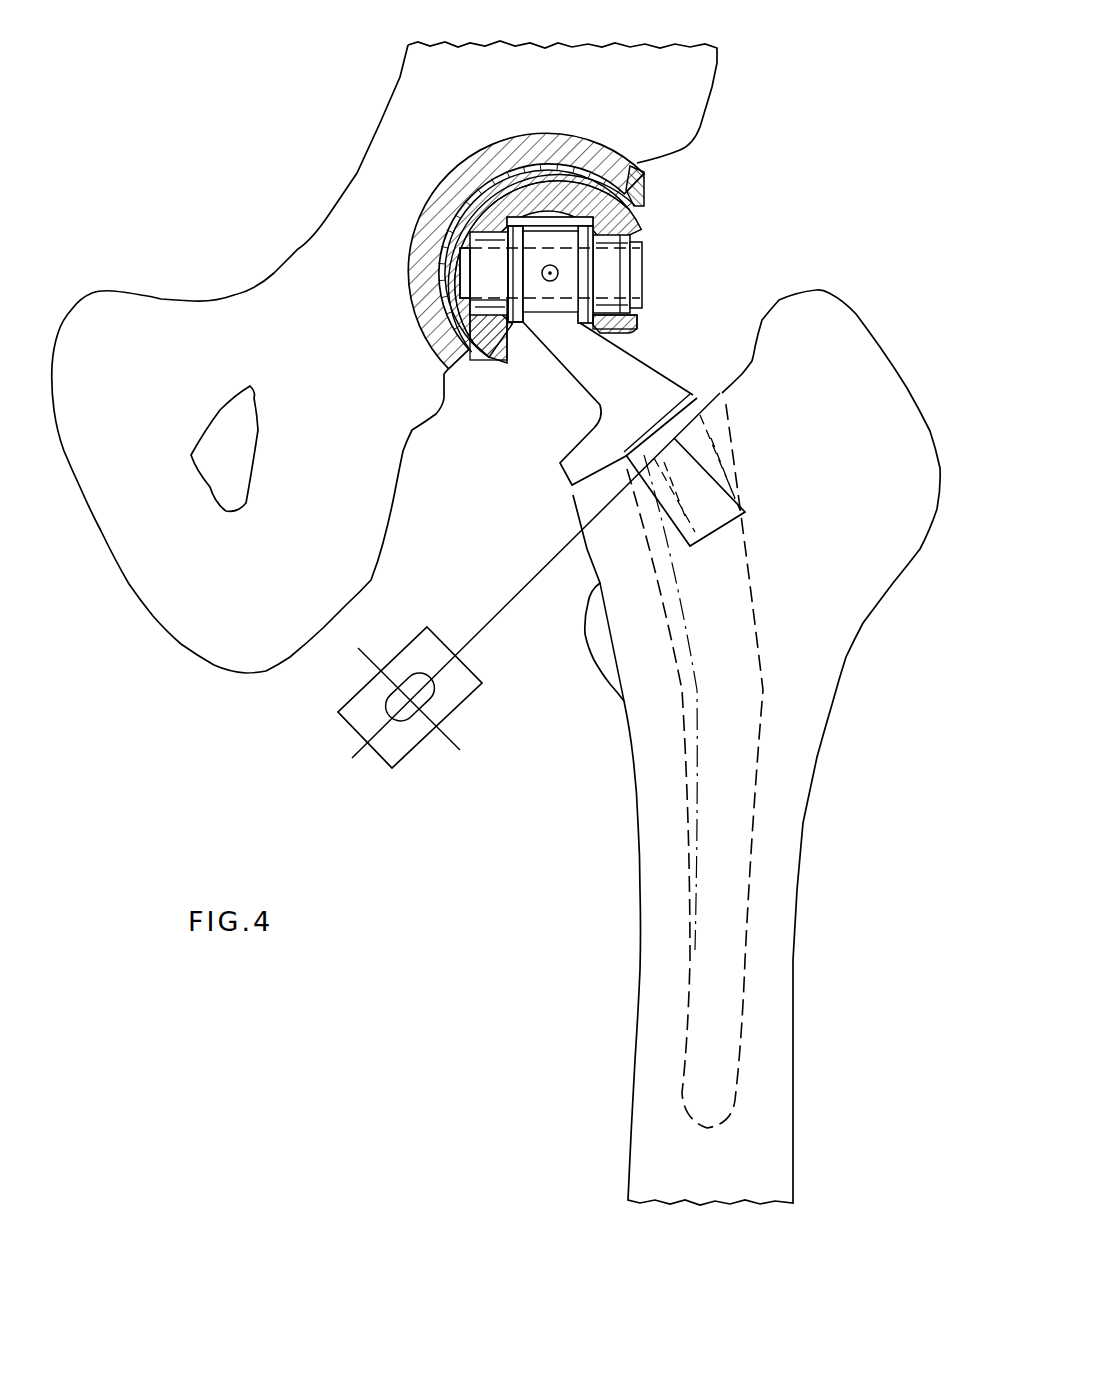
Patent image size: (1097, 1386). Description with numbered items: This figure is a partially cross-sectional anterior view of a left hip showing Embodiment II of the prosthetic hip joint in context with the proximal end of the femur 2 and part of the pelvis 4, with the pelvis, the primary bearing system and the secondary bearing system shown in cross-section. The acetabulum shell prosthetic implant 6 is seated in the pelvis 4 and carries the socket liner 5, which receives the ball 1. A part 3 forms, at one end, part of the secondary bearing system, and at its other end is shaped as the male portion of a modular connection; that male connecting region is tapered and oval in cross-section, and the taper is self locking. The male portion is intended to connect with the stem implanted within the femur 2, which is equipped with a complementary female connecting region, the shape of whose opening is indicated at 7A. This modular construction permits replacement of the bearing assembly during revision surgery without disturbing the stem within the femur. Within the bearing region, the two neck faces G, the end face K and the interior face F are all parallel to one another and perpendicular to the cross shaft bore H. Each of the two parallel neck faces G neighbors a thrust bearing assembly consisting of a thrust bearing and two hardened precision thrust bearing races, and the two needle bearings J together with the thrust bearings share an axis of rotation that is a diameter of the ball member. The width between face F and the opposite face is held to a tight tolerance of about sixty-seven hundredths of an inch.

The ball 1 is at (640, 217).
The femur 2 is at (846, 295).
The part 3 is at (644, 362).
The pelvis 4 is at (717, 63).
The socket liner 5 is at (640, 183).
The acetabulum shell prosthetic implant 6 is at (623, 150).
The shape of the opening of the female connection region 7A is at (438, 633).
The needle bearings J is at (487, 223).
The end face K is at (460, 241).
The cross shaft bore H is at (538, 248).
The neck faces G is at (522, 300).
The interior face F is at (510, 320).